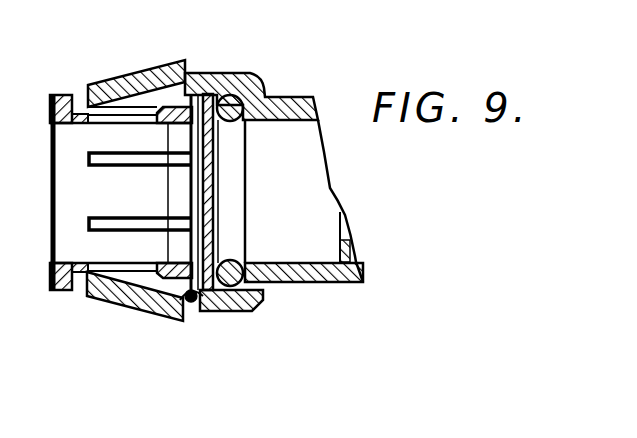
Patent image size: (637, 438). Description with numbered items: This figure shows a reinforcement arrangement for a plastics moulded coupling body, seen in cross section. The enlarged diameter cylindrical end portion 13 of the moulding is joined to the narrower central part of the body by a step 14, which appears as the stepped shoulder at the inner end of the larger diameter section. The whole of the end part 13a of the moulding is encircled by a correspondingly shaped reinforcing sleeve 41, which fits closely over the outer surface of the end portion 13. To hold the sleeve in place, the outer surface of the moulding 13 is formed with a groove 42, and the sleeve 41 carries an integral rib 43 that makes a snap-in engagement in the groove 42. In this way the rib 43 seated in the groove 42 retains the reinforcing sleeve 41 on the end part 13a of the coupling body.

The enlarged diameter cylindrical end portion 13 is at (235, 73).
The end part 13a is at (140, 82).
The step 14 is at (273, 284).
The reinforcing sleeve 41 is at (120, 300).
The groove 42 is at (196, 306).
The integral rib 43 is at (172, 320).